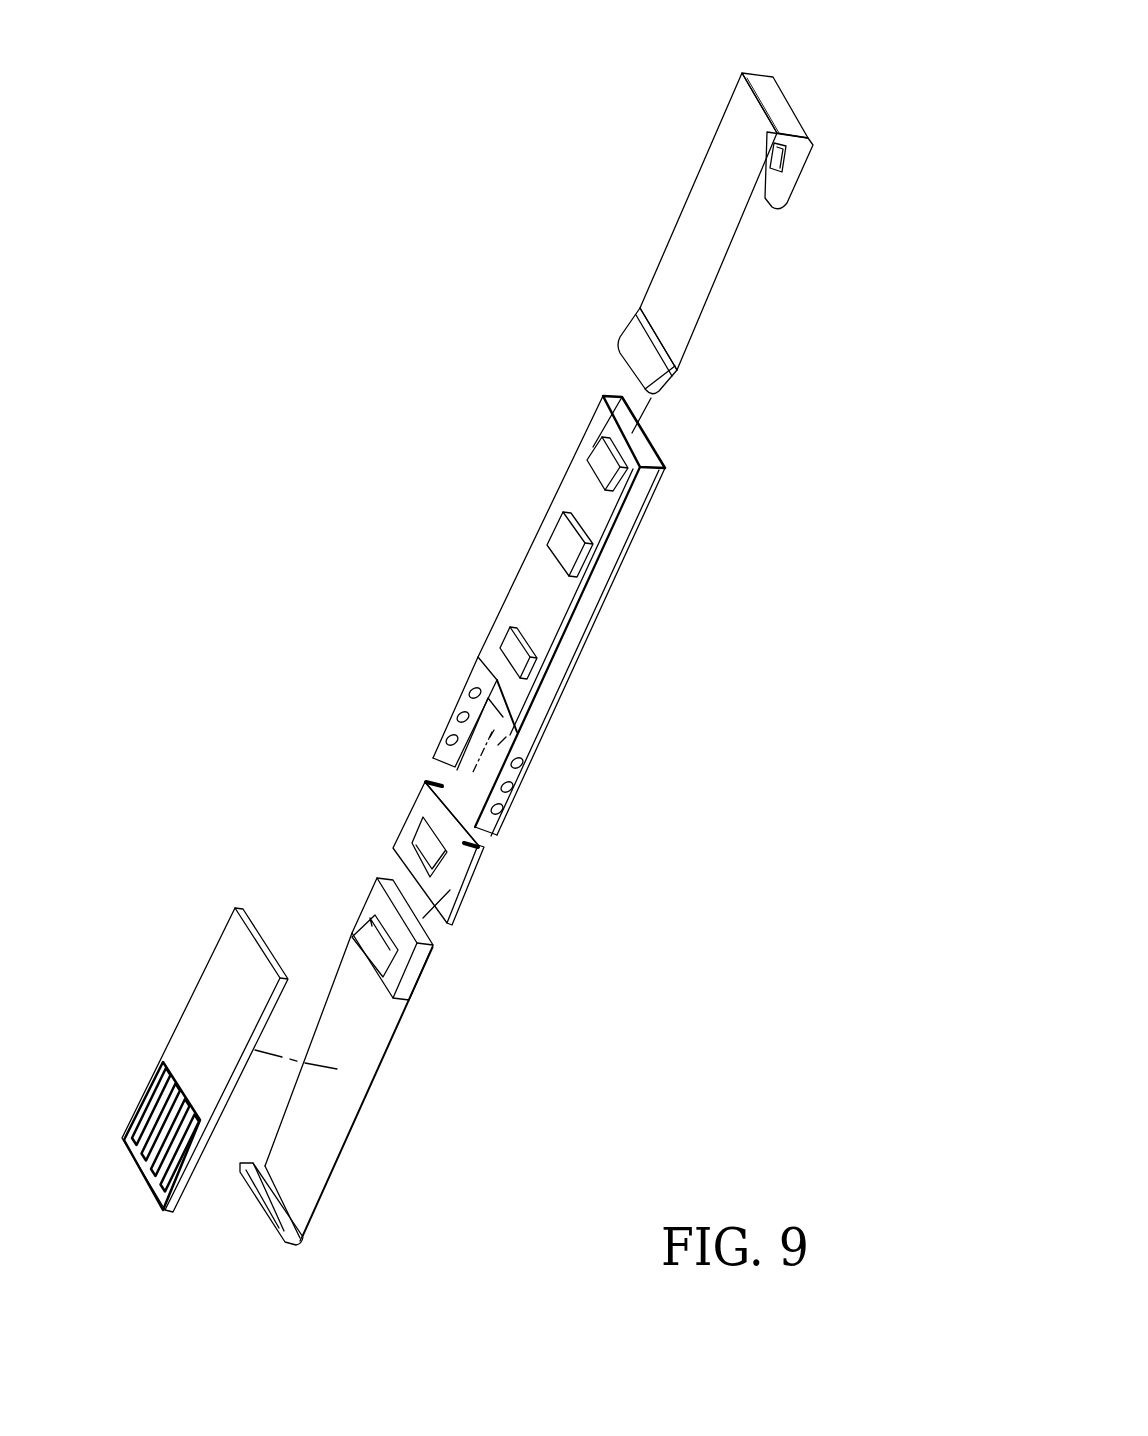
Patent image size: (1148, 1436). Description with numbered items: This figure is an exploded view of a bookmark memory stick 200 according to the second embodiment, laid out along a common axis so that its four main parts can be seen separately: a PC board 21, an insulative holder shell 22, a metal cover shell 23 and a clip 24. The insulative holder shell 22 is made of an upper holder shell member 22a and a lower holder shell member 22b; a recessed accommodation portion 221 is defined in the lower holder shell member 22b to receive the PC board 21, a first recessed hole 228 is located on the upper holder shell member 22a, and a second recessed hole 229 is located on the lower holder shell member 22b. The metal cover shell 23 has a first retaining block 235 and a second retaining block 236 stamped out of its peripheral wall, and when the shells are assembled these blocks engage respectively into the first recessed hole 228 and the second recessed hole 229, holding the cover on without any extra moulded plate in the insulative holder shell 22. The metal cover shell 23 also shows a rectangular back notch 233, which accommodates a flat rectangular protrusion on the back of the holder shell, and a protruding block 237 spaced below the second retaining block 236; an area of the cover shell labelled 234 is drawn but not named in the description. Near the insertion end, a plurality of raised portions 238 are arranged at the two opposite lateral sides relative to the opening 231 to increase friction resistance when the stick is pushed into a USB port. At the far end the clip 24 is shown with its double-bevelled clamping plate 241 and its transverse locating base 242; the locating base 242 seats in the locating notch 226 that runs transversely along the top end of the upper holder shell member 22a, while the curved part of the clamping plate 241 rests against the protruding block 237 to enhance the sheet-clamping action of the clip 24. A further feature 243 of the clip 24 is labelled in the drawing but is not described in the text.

The bookmark memory stick 200 is at (889, 268).
The PC board 21 is at (182, 998).
The insulative holder shell 22 is at (430, 1002).
The upper holder shell member 22a is at (422, 783).
The lower holder shell member 22b is at (327, 1187).
The recessed accommodation portion 221 is at (350, 1008).
The locating notch 226 is at (455, 822).
The first recessed hole 228 is at (423, 835).
The second recessed hole 229 is at (380, 942).
The metal cover shell 23 is at (498, 573).
The opening 231 is at (435, 778).
The rectangular back notch 233 is at (498, 745).
The plate of frame 234 is at (527, 577).
The first retaining block 235 is at (593, 443).
The second retaining block 236 is at (560, 513).
The protruding block 237 is at (508, 643).
The raised portions 238 is at (508, 792).
The clip 24 is at (698, 205).
The double-bevelled clamping plate 241 is at (682, 248).
The transverse locating base 242 is at (778, 107).
The slot of cap 243 is at (780, 198).